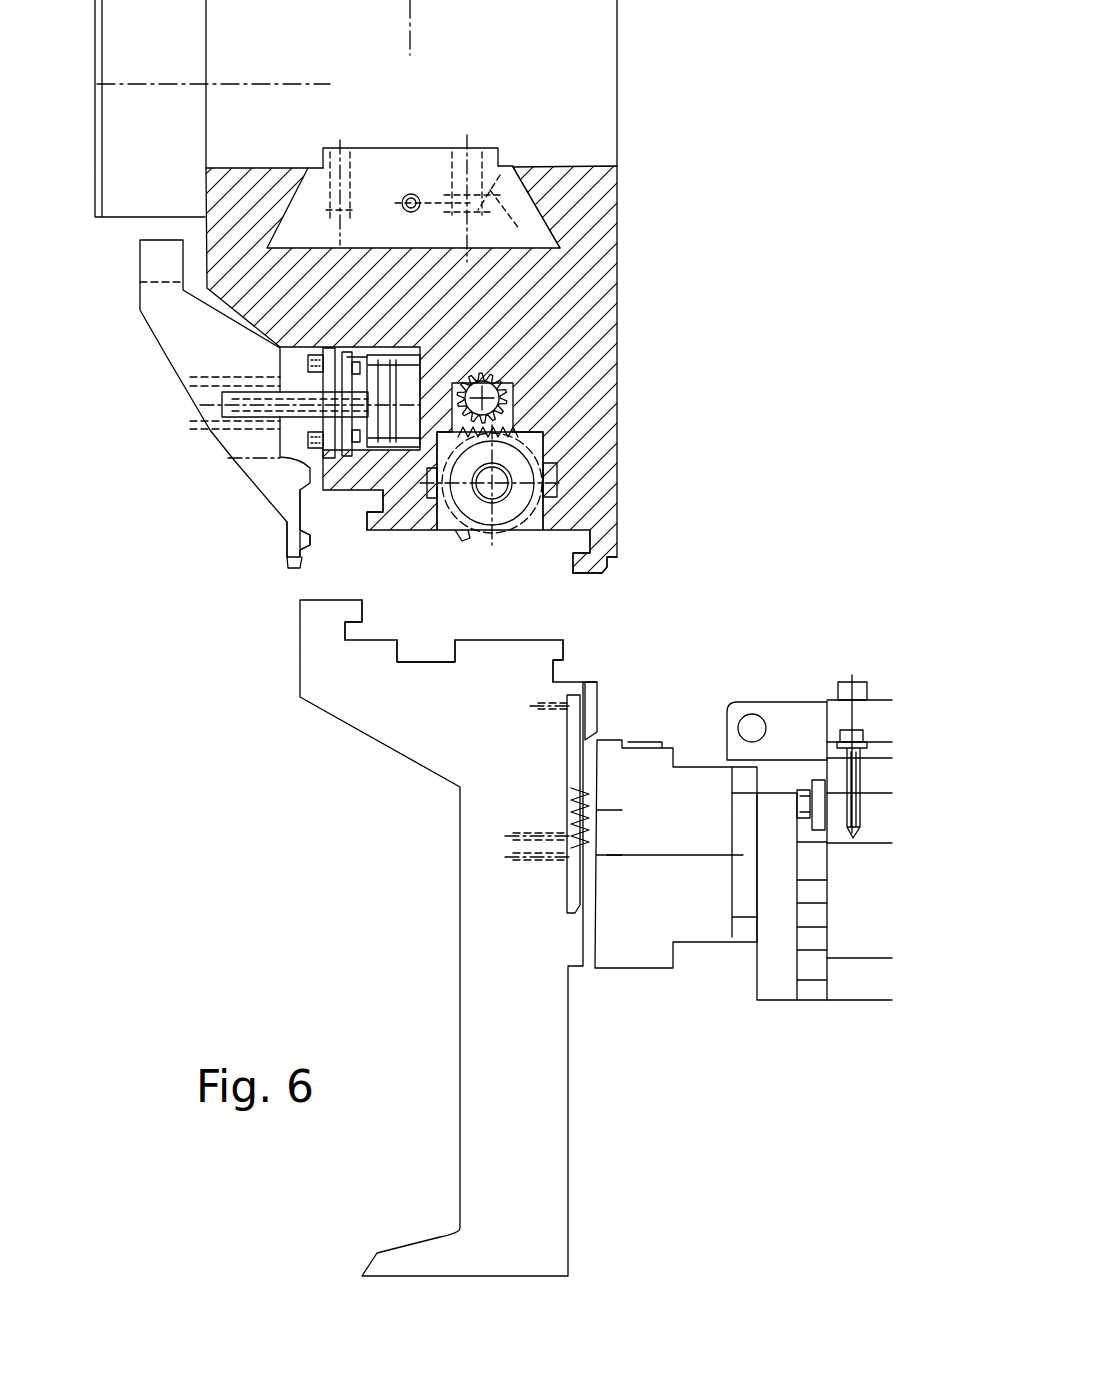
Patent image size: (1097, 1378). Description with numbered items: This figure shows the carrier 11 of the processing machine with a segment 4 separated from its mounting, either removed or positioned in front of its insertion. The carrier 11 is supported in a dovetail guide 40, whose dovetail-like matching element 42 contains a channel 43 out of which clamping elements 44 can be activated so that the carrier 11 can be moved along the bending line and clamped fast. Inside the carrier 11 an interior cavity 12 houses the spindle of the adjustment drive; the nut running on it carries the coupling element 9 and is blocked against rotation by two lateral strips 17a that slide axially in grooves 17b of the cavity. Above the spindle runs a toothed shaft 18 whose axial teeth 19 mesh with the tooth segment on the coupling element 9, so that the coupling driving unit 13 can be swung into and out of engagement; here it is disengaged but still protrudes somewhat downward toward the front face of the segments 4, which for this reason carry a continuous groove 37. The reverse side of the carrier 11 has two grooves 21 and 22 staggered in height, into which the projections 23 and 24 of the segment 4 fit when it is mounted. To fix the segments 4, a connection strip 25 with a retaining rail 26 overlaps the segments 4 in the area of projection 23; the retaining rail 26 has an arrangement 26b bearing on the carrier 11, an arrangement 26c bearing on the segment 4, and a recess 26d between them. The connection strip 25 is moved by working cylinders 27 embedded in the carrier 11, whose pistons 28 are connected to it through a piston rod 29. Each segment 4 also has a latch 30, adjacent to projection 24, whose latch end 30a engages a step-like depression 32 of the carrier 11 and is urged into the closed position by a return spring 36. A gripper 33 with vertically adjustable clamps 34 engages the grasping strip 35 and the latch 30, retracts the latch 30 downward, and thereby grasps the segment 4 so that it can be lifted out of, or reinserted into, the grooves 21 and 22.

The segment 4 is at (548, 1128).
The coupling element 9 is at (548, 462).
The carrier 11 is at (568, 301).
The interior cavity 12 is at (545, 455).
The coupling driving unit 13 is at (460, 532).
The lateral strips 17a is at (543, 495).
The grooves 17b is at (548, 470).
The toothed shaft 18 is at (500, 385).
The teeth 19 is at (518, 420).
The groove 21 is at (373, 498).
The groove 22 is at (578, 540).
The projection 23 is at (350, 610).
The projection 24 is at (563, 652).
The connection strip 25 is at (180, 358).
The retaining rail 26 is at (277, 482).
The arrangement on the carrier 26b is at (280, 505).
The arrangement on segment 26c is at (312, 565).
The recess 26d is at (282, 553).
The working cylinders 27 is at (412, 422).
The piston 28 is at (283, 534).
The piston rod 29 is at (237, 412).
The latch 30 is at (593, 710).
The latch end 30a is at (597, 683).
The depression 32 is at (612, 568).
The gripper 33 is at (704, 972).
The clamps 34 is at (606, 770).
The grasping strip 35 is at (586, 930).
The return spring 36 is at (572, 820).
The continuous groove 37 is at (427, 653).
The dovetail guide 40 is at (512, 158).
The dovetail-like matching element 42 is at (388, 188).
The channel 43 is at (415, 196).
The clamping elements 44 is at (560, 236).